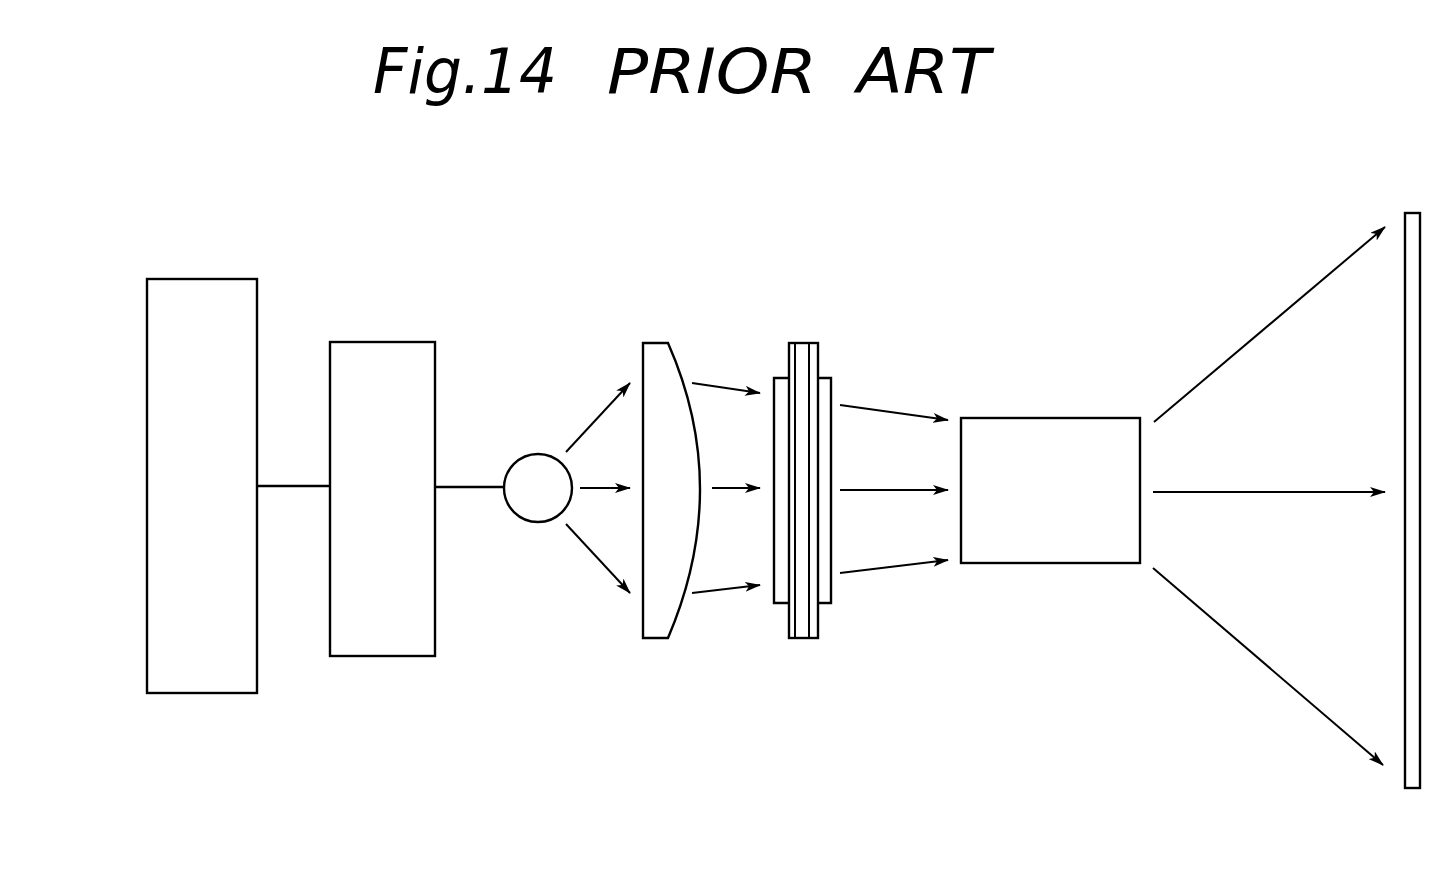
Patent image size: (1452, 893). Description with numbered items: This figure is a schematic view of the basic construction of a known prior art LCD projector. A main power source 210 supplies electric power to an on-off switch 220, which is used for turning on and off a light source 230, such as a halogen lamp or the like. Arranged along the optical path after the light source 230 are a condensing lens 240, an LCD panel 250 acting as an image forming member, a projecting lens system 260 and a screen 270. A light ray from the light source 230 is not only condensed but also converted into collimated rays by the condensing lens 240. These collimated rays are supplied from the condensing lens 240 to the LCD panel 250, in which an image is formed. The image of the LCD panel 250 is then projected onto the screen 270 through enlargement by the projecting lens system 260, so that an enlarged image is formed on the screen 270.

The main power source 210 is at (205, 279).
The on-off switch 220 is at (365, 342).
The light source 230 is at (537, 454).
The condensing lens 240 is at (658, 343).
The LCD panel 250 is at (804, 343).
The projecting lens system 260 is at (1046, 418).
The screen 270 is at (1413, 213).